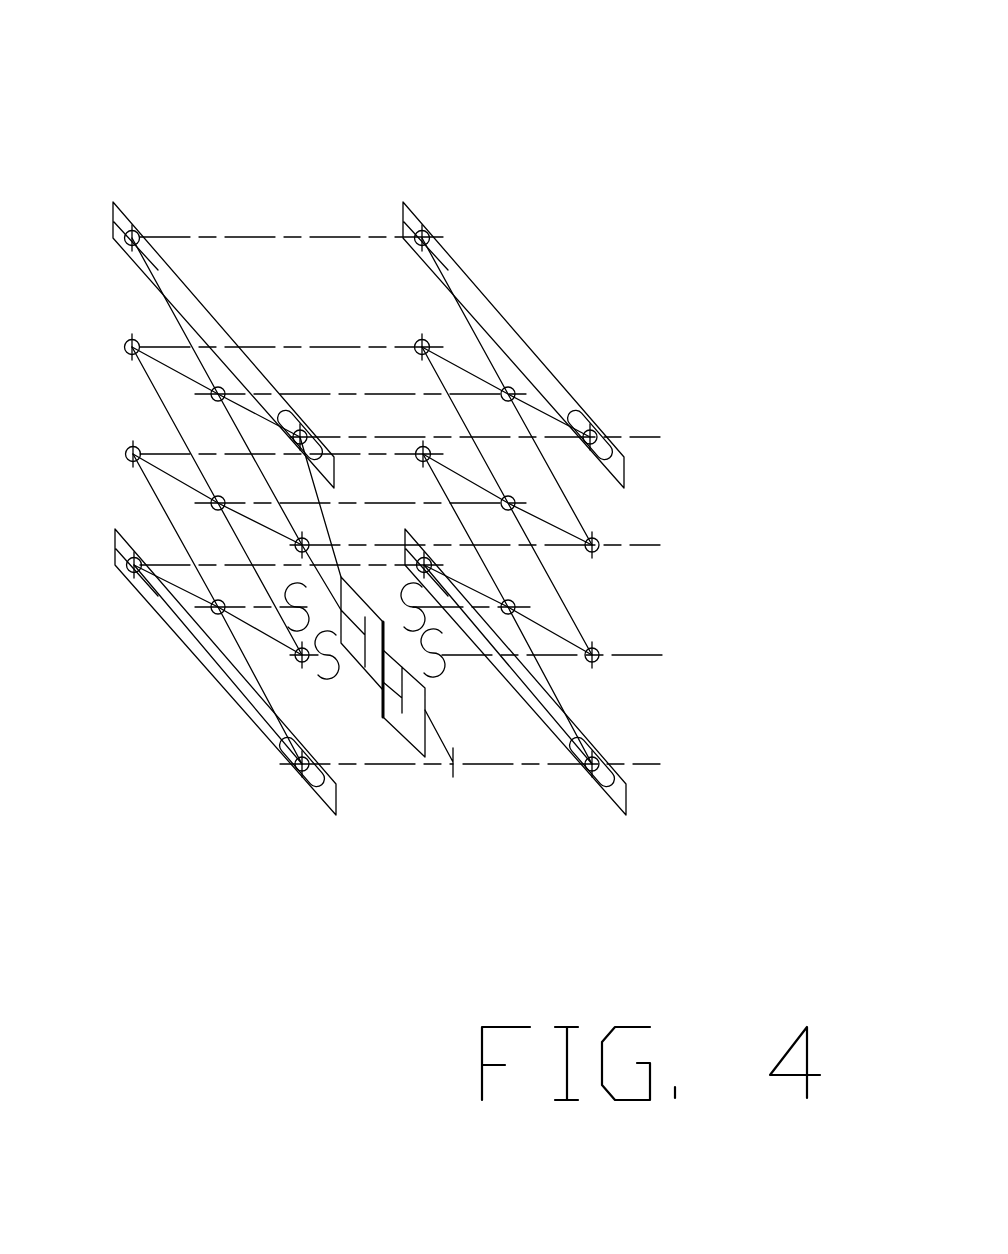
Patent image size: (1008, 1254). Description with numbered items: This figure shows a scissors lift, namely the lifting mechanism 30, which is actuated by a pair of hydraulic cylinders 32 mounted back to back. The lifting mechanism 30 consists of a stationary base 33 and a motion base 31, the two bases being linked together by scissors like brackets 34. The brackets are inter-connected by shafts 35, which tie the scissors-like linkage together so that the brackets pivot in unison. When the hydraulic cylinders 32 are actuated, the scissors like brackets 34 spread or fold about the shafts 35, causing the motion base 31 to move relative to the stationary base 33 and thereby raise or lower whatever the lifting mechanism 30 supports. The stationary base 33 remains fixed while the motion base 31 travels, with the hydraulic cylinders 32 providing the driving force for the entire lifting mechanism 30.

The lifting mechanism 30 is at (175, 635).
The motion base 31 is at (623, 487).
The hydraulic cylinders 32 is at (427, 707).
The stationary base 33 is at (625, 813).
The scissors like brackets 34 is at (568, 608).
The shafts 35 is at (328, 345).